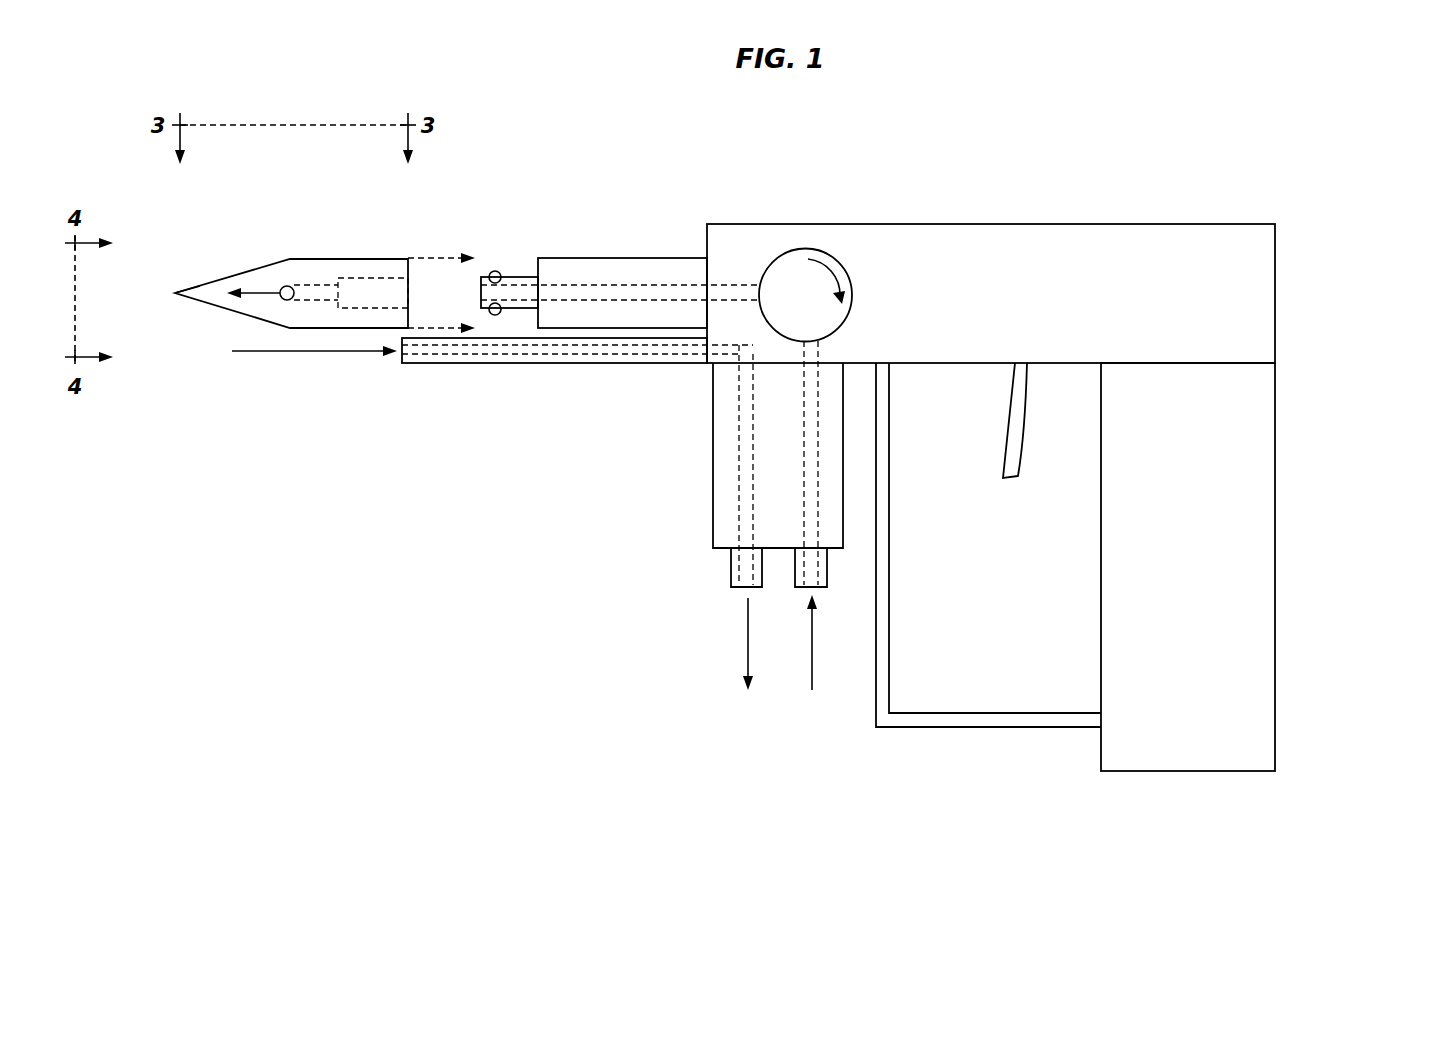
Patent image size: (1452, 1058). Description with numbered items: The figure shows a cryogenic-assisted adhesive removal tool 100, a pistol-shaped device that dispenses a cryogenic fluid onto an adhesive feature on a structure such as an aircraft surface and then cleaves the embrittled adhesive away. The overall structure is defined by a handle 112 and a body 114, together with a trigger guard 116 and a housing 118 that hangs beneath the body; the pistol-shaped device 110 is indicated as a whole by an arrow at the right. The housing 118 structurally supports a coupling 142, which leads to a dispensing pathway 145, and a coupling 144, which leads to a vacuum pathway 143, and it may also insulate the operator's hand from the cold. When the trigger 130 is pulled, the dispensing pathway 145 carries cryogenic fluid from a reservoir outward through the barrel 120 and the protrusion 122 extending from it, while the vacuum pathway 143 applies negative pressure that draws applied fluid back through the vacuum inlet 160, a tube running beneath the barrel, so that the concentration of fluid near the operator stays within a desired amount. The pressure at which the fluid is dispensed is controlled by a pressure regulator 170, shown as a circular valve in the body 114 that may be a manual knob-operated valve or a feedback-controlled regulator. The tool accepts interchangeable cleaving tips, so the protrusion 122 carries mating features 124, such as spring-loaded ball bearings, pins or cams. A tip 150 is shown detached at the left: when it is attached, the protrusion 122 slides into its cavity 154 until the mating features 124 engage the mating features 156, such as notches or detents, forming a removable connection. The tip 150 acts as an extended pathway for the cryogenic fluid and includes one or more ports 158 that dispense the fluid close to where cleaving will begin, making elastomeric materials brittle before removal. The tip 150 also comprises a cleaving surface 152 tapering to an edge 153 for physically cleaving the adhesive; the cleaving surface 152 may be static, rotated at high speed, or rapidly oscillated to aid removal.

The cryogenic-assisted adhesive removal tool 100 is at (793, 505).
The handheld device 110 is at (1009, 505).
The handle 112 is at (1153, 771).
The body 114 is at (966, 224).
The trigger guard 116 is at (978, 728).
The housing 118 is at (713, 465).
The barrel 120 is at (600, 258).
The protrusion 122 is at (518, 277).
The mating features 124 is at (495, 271).
The trigger 130 is at (1010, 437).
The coupling 142 is at (731, 572).
The vacuum pathway 143 is at (738, 418).
The coupling 144 is at (827, 577).
The dispensing pathway 145 is at (820, 357).
The tip 150 is at (311, 269).
The cleaving surface 152 is at (214, 280).
The edge 153 is at (177, 292).
The cavity 154 is at (387, 278).
The mating features 156 is at (355, 275).
The ports 158 is at (284, 286).
The vacuum inlet 160 is at (508, 363).
The pressure regulator 170 is at (840, 259).